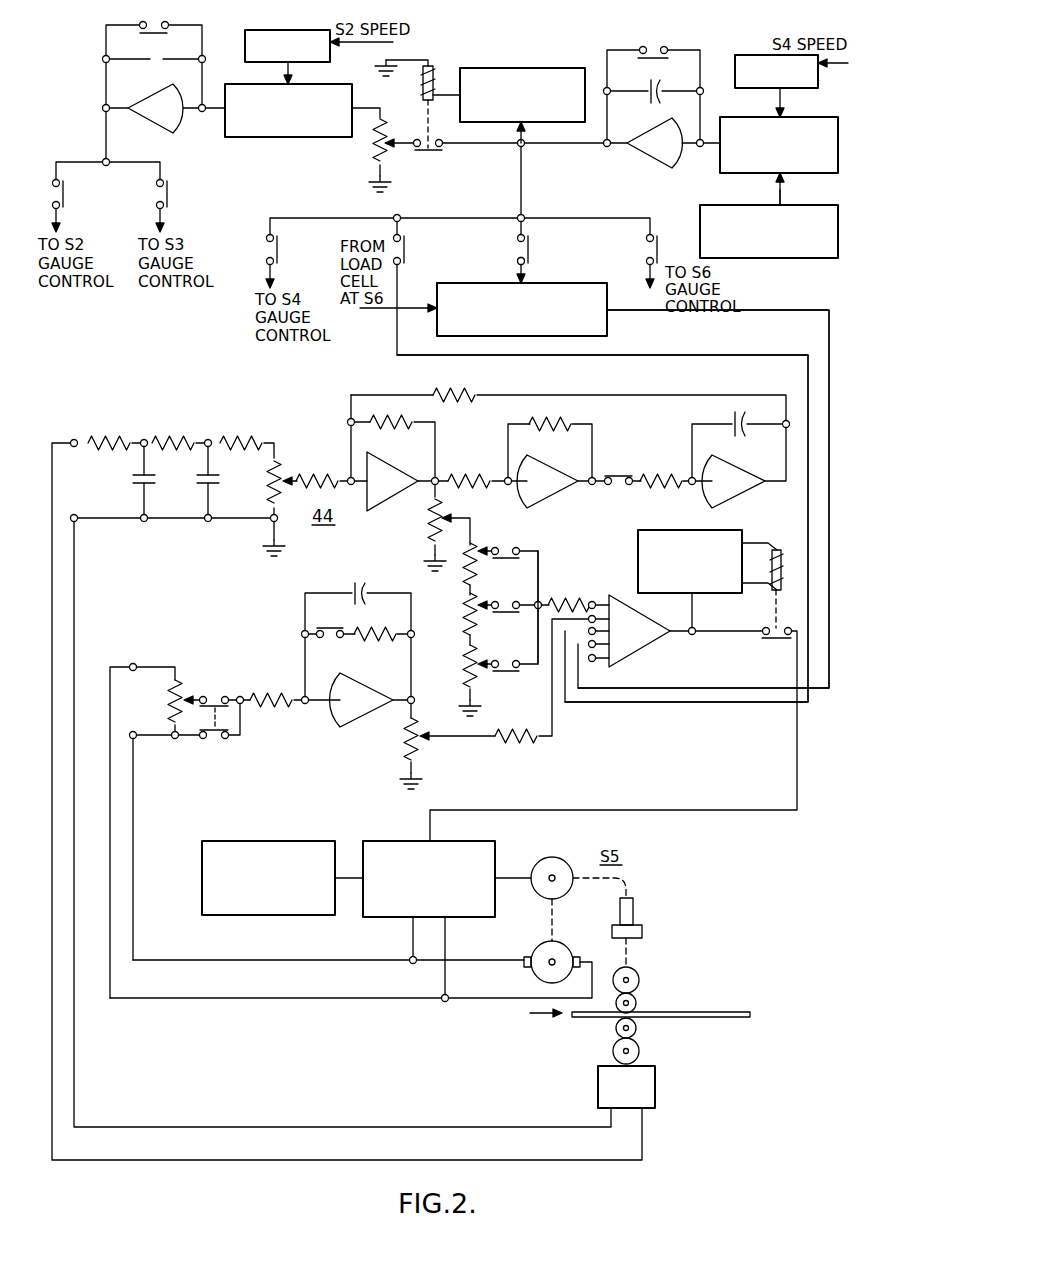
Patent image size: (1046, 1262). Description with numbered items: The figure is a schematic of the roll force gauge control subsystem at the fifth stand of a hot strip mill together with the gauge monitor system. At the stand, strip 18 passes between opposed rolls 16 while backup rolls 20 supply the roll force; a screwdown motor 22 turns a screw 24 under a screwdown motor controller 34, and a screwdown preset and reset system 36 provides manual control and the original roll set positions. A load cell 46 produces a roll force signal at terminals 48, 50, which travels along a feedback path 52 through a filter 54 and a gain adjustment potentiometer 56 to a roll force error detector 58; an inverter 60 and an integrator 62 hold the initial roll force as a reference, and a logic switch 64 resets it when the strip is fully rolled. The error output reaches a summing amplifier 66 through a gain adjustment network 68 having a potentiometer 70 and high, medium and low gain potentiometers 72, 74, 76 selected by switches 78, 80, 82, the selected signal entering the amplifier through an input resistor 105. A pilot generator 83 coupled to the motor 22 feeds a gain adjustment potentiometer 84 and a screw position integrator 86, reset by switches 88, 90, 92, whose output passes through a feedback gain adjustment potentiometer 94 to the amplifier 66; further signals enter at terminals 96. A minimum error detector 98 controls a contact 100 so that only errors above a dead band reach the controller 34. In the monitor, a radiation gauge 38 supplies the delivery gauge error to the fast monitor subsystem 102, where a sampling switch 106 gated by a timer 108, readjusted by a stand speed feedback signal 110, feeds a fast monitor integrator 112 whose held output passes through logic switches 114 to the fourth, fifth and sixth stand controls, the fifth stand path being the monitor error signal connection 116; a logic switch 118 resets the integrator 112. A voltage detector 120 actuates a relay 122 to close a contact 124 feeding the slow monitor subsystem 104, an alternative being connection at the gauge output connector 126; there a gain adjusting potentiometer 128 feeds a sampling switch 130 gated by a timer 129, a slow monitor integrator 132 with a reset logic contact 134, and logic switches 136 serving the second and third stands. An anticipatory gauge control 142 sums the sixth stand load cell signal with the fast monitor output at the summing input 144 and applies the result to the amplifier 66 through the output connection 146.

The rolls 16 is at (637, 998).
The hot steel strip 18 is at (712, 1011).
The backup rolls 20 is at (640, 968).
The screwdown motor 22 is at (566, 864).
The screw 24 is at (636, 910).
The screwdown motor controller 34 is at (398, 840).
The screwdown preset and reset system 36 is at (253, 840).
The radiation gauge 38 is at (815, 205).
The load cell 46 is at (657, 1078).
The terminal 48 is at (74, 439).
The terminal 50 is at (77, 522).
The feedback path 52 is at (283, 430).
The filter 54 is at (188, 501).
The gain adjustment potentiometer 56 is at (270, 488).
The roll force error detector 58 is at (398, 470).
The inverter 60 is at (560, 470).
The integrator 62 is at (745, 470).
The logic switch 64 is at (617, 486).
The summing amplifier 66 is at (648, 640).
The gain adjustment network 68 is at (512, 583).
The potentiometer 70 is at (430, 521).
The high gain potentiometer 72 is at (466, 560).
The medium gain potentiometer 74 is at (463, 612).
The low gain potentiometer 76 is at (463, 657).
The logic or manual switch 78 is at (505, 547).
The logic or manual switch 80 is at (508, 602).
The logic or manual switch 82 is at (505, 661).
The pilot generator 83 is at (538, 977).
The gain adjustment potentiometer 84 is at (180, 692).
The integrator 86 is at (372, 690).
The logic or manual switch 88 is at (226, 697).
The logic or manual switch 90 is at (213, 738).
The logic or manual switch 92 is at (328, 637).
The feedback gain adjustment potentiometer 94 is at (406, 742).
The terminal 96 is at (592, 662).
The minimum error detector 98 is at (638, 552).
The contact 100 is at (770, 626).
The fast late stand monitor subsystem 102 is at (730, 195).
The slow early stand monitor subsystem 104 is at (362, 183).
The input resistor 105 is at (592, 600).
The sampling switch 106 is at (822, 114).
The timer 108 is at (735, 58).
The stand speed feedback signal 110 is at (838, 66).
The fast monitor integrator 112 is at (645, 158).
The logic switches 114 is at (279, 248).
The monitor error signal connection 116 is at (549, 356).
The logic switch 118 is at (655, 48).
The voltage detector 120 is at (560, 68).
The relay 122 is at (431, 67).
The contact 124 is at (392, 141).
The output connector 126 is at (777, 193).
The gain adjusting potentiometer 128 is at (392, 172).
The timer 129 is at (304, 68).
The sampling switch 130 is at (279, 138).
The slow monitor integrator 132 is at (140, 116).
The reset logic contact 134 is at (140, 31).
The logic switches 136 is at (64, 195).
The anticipatory gauge control 142 is at (582, 337).
The fast monitor summing input 144 is at (517, 261).
The anticipatory control output connection 146 is at (719, 688).